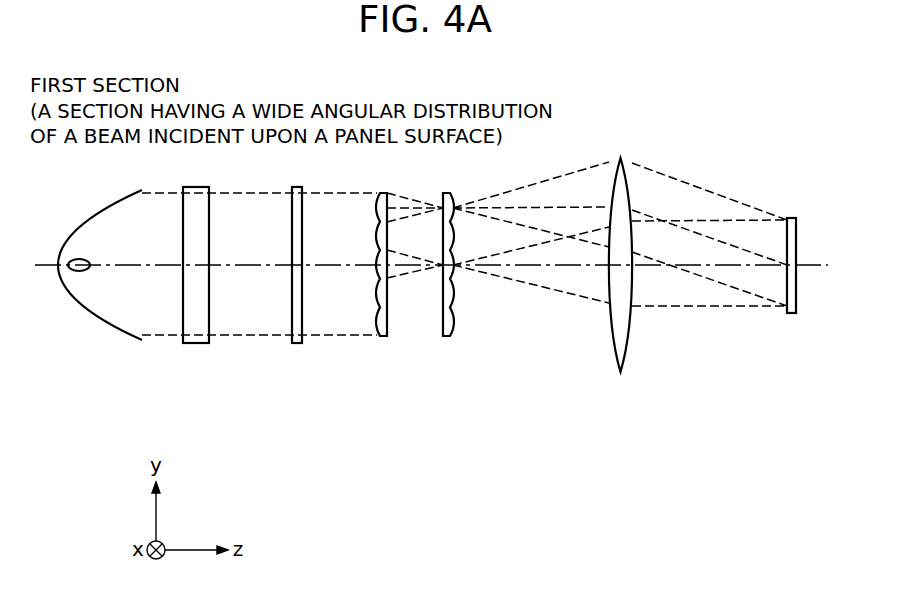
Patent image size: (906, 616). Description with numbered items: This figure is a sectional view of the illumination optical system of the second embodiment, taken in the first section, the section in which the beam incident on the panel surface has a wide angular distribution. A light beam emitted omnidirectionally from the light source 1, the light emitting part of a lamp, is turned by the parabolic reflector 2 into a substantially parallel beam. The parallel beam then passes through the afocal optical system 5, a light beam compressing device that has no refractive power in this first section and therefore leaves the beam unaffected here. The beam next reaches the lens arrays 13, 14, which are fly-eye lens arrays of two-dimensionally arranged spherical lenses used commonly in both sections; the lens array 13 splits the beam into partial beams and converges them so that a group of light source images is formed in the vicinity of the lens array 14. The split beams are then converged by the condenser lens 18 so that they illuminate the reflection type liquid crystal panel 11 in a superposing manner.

The light source 1 is at (83, 271).
The parabolic reflector 2 is at (112, 333).
The afocal optical system 5 is at (196, 344).
The lens array 13 is at (384, 337).
The lens array 14 is at (447, 337).
The condenser lens 18 is at (621, 372).
The reflection type liquid crystal panel 11 is at (794, 314).